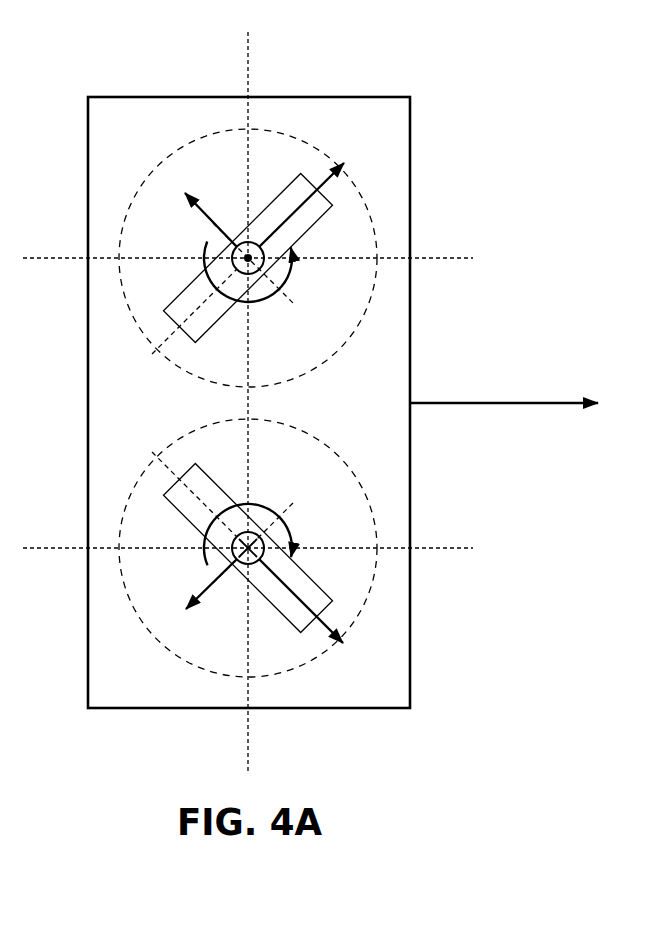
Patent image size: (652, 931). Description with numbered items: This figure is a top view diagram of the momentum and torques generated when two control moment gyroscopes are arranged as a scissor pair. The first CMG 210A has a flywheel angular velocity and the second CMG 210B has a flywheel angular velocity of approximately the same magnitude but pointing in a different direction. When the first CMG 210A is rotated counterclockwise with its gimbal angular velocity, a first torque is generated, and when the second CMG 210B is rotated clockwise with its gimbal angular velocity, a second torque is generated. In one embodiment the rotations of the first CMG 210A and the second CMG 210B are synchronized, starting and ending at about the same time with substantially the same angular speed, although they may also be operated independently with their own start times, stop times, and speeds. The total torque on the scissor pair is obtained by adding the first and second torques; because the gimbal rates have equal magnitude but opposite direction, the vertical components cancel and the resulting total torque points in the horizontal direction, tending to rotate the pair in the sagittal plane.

The first CMG 210A is at (150, 162).
The second CMG 210B is at (380, 439).